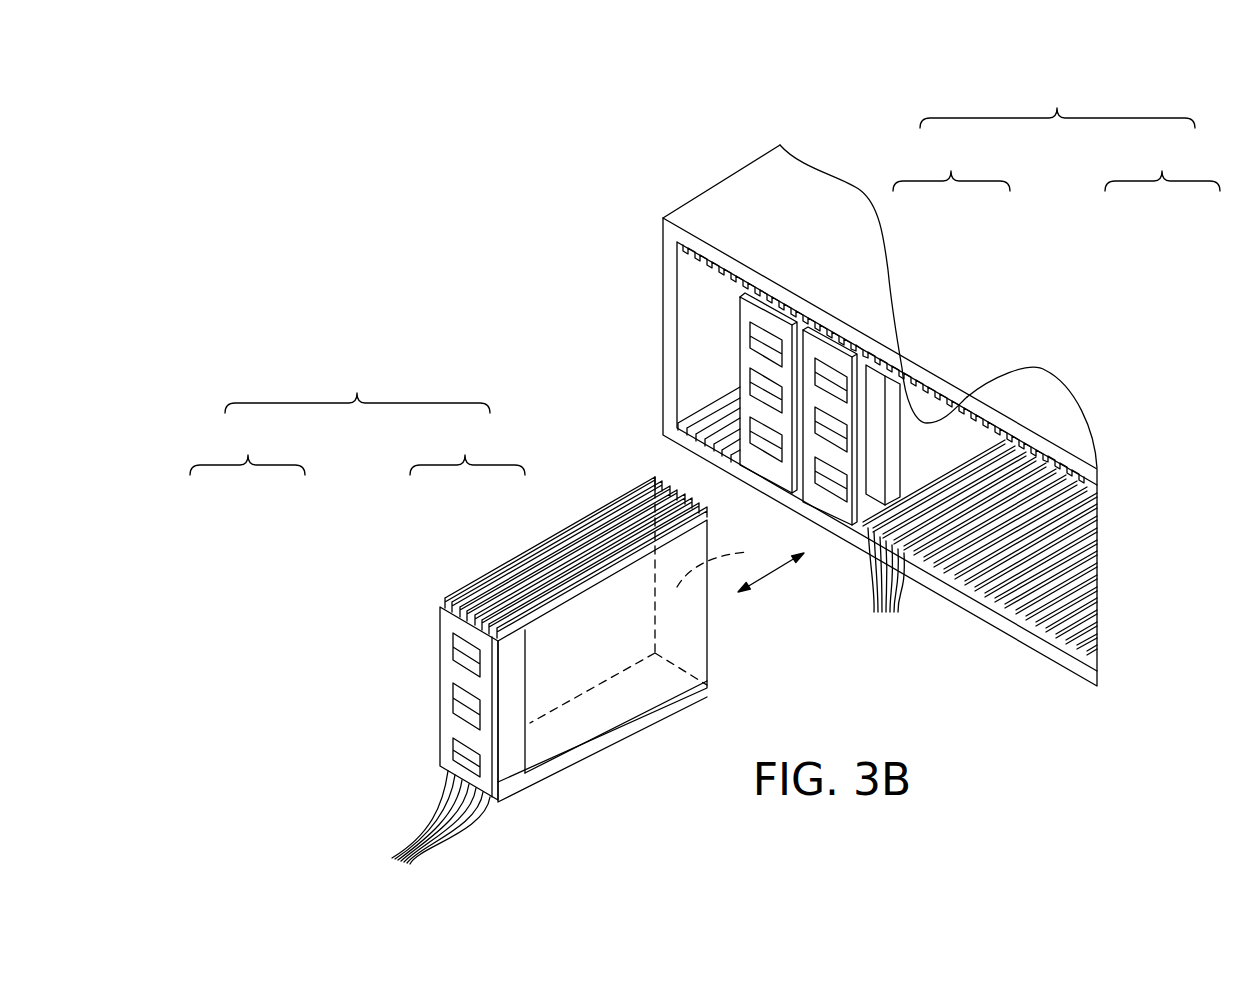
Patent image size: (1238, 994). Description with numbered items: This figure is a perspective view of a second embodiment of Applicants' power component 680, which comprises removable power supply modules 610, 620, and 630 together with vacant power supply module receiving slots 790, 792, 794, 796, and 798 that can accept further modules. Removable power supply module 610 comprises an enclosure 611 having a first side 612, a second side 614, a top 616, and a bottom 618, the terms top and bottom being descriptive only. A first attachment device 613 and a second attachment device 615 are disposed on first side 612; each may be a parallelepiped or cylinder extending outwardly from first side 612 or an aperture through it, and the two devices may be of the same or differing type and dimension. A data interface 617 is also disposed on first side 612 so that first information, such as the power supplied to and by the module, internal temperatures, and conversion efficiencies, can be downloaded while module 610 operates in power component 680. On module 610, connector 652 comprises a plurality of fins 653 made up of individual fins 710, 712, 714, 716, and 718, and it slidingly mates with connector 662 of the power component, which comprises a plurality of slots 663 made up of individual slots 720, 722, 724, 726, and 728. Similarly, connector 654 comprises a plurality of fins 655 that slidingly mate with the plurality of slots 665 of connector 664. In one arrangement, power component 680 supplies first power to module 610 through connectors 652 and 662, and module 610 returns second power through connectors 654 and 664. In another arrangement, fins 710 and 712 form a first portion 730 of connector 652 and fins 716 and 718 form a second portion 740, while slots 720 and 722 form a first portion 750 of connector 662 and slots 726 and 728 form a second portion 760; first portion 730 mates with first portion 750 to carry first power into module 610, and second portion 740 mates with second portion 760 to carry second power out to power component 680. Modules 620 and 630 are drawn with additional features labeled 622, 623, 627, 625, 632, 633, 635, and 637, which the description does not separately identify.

The vacant power supply module receiving slot 790 is at (697, 293).
The connector 662 is at (1042, 369).
The connector 664 is at (1097, 468).
The removable power supply module 620 is at (752, 312).
The contact opening 622 is at (762, 338).
The contact opening 623 is at (763, 383).
The contact opening 627 is at (763, 443).
The contact 625 is at (757, 458).
The removable power supply module 630 is at (830, 377).
The connector housing 632 is at (804, 330).
The connector 633 is at (830, 340).
The contact 635 is at (835, 490).
The contact 637 is at (827, 447).
The plurality of slots 665 is at (876, 585).
The vacant power supply module receiving slot 792 is at (930, 537).
The vacant power supply module receiving slot 794 is at (982, 572).
The vacant power supply module receiving slot 796 is at (1040, 657).
The power component 680 is at (1065, 668).
The vacant power supply module receiving slot 798 is at (1100, 681).
The second side 614 is at (740, 552).
The plurality of slots 663 is at (1057, 99).
The first portion of connector 662 750 is at (951, 162).
The second portion of connector 662 760 is at (1162, 162).
The slot 720 is at (883, 363).
The slot 722 is at (900, 370).
The slot 724 is at (913, 377).
The slot 726 is at (925, 385).
The slot 728 is at (945, 395).
The removable power supply module 610 is at (608, 745).
The enclosure 611 is at (552, 777).
The bottom 618 is at (632, 685).
The connector 654 is at (500, 802).
The connector 652 is at (543, 550).
The top 616 is at (445, 606).
The first attachment device 613 is at (462, 652).
The first side 612 is at (453, 668).
The data interface 617 is at (462, 698).
The second attachment device 615 is at (457, 745).
The plurality of fins 655 is at (423, 828).
The plurality of fins 653 is at (357, 384).
The first portion of connector 652 730 is at (247, 446).
The second portion of connector 652 740 is at (467, 446).
The fin 710 is at (450, 603).
The fin 712 is at (460, 607).
The fin 714 is at (470, 611).
The fin 716 is at (480, 615).
The fin 718 is at (500, 618).